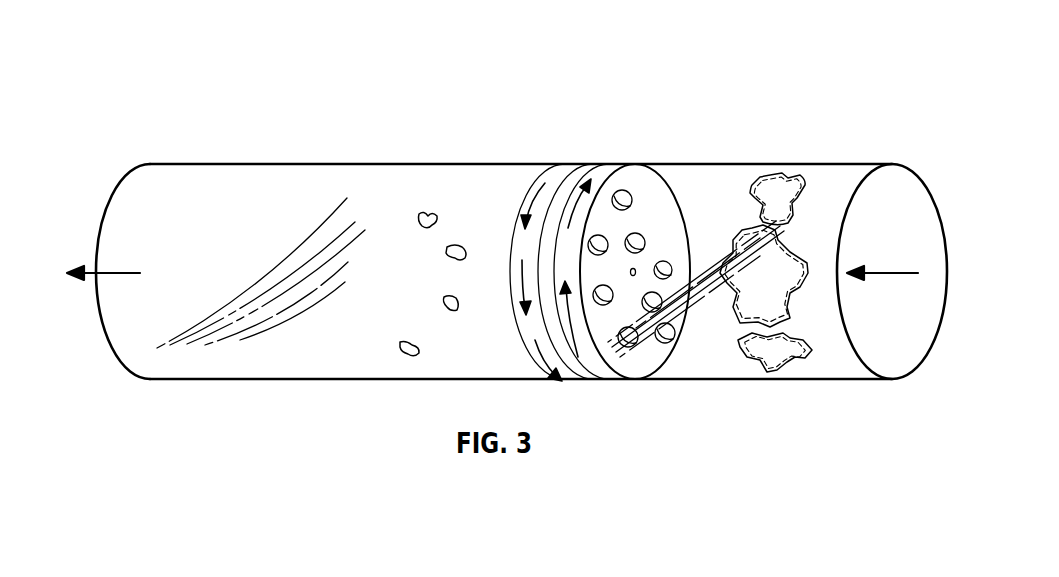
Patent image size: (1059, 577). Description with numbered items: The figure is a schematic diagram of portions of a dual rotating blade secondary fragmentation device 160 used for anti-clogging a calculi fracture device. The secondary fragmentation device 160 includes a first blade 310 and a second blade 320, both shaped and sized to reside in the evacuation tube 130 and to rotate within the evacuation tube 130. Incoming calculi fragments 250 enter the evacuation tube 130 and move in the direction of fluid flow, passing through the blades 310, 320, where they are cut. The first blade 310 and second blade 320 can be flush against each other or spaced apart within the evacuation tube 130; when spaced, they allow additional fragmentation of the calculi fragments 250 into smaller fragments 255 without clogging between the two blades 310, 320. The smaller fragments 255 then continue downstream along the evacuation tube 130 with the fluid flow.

The evacuation tube 130 is at (465, 163).
The dual rotating blade secondary fragmentation device 160 is at (812, 88).
The calculi fragments 250 is at (788, 190).
The smaller fragments 255 is at (447, 248).
The first blade 310 is at (613, 163).
The second blade 320 is at (566, 163).